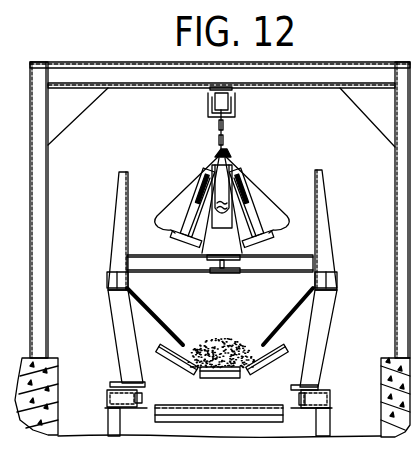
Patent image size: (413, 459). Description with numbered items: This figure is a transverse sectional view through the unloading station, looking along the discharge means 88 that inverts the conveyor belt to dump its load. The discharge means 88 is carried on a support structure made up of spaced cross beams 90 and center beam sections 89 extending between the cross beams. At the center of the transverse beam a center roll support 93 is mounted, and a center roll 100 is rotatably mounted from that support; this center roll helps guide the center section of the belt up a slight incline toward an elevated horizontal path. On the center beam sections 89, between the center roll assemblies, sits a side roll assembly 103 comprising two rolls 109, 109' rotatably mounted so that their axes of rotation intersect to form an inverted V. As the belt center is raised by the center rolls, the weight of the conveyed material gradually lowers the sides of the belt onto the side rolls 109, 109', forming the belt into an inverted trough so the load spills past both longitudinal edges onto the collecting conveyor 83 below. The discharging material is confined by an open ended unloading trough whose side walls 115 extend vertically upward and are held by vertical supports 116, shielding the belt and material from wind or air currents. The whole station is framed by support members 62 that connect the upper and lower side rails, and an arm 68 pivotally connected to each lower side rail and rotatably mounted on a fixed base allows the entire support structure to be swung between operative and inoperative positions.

The support member 62 is at (127, 330).
The arm 68 is at (114, 429).
The collecting conveyor 83 is at (276, 363).
The discharge means 88 is at (237, 152).
The center beam section 89 is at (228, 273).
The cross beam 90 is at (249, 263).
The center roll support 93 is at (215, 238).
The center roll 100 is at (231, 158).
The side roll assembly 103 is at (167, 245).
The side roll 109 is at (182, 202).
The side roll 109' is at (268, 202).
The side wall 115 is at (129, 175).
The vertical support 116 is at (119, 211).